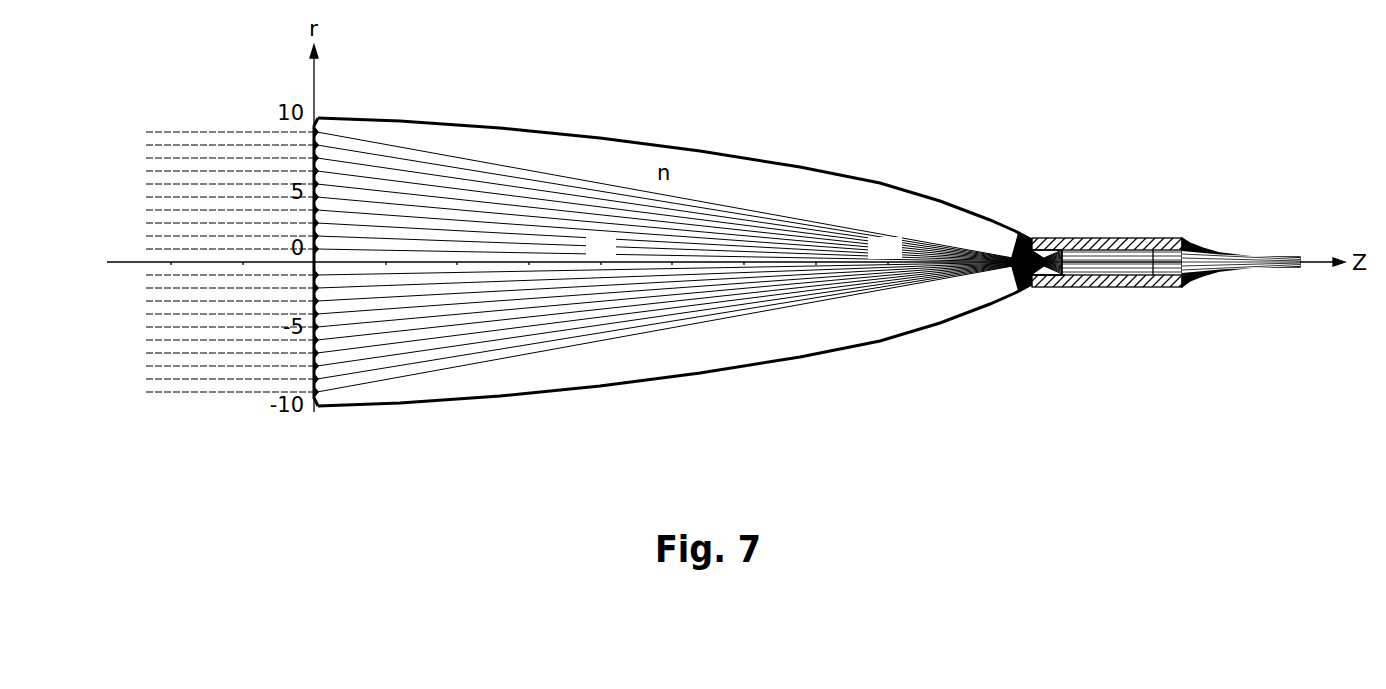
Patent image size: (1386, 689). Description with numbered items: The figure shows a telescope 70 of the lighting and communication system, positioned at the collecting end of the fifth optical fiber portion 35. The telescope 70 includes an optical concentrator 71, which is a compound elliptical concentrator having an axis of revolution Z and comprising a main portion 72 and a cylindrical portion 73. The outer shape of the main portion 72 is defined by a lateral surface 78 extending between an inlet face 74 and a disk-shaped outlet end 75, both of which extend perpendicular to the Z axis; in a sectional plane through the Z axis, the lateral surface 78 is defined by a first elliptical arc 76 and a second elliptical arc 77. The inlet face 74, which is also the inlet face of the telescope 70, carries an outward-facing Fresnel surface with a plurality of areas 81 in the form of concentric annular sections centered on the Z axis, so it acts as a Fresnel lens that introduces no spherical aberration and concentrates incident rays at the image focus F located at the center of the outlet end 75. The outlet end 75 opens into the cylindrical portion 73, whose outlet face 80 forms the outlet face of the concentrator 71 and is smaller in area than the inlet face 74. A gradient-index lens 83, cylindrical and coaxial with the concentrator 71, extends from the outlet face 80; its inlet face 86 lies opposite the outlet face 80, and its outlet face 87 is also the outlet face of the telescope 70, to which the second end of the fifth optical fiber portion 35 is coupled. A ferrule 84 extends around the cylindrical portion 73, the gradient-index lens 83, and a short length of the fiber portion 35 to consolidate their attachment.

The fifth optical fiber portion 35 is at (1290, 256).
The telescope 70 is at (642, 300).
The optical concentrator 71 is at (757, 156).
The main portion 72 is at (880, 182).
The cylindrical portion 73 is at (1050, 272).
The inlet face 74 is at (270, 380).
The outlet end 75 is at (1042, 268).
The first elliptical arc 76 is at (446, 123).
The second elliptical arc 77 is at (468, 404).
The lateral surface 78 is at (637, 141).
The outlet face 80 is at (1047, 238).
The areas 81 is at (313, 151).
The gradient-index lens 83 is at (1100, 288).
The ferrule 84 is at (1153, 248).
The inlet face 86 is at (1055, 288).
The outlet face 87 is at (1160, 277).